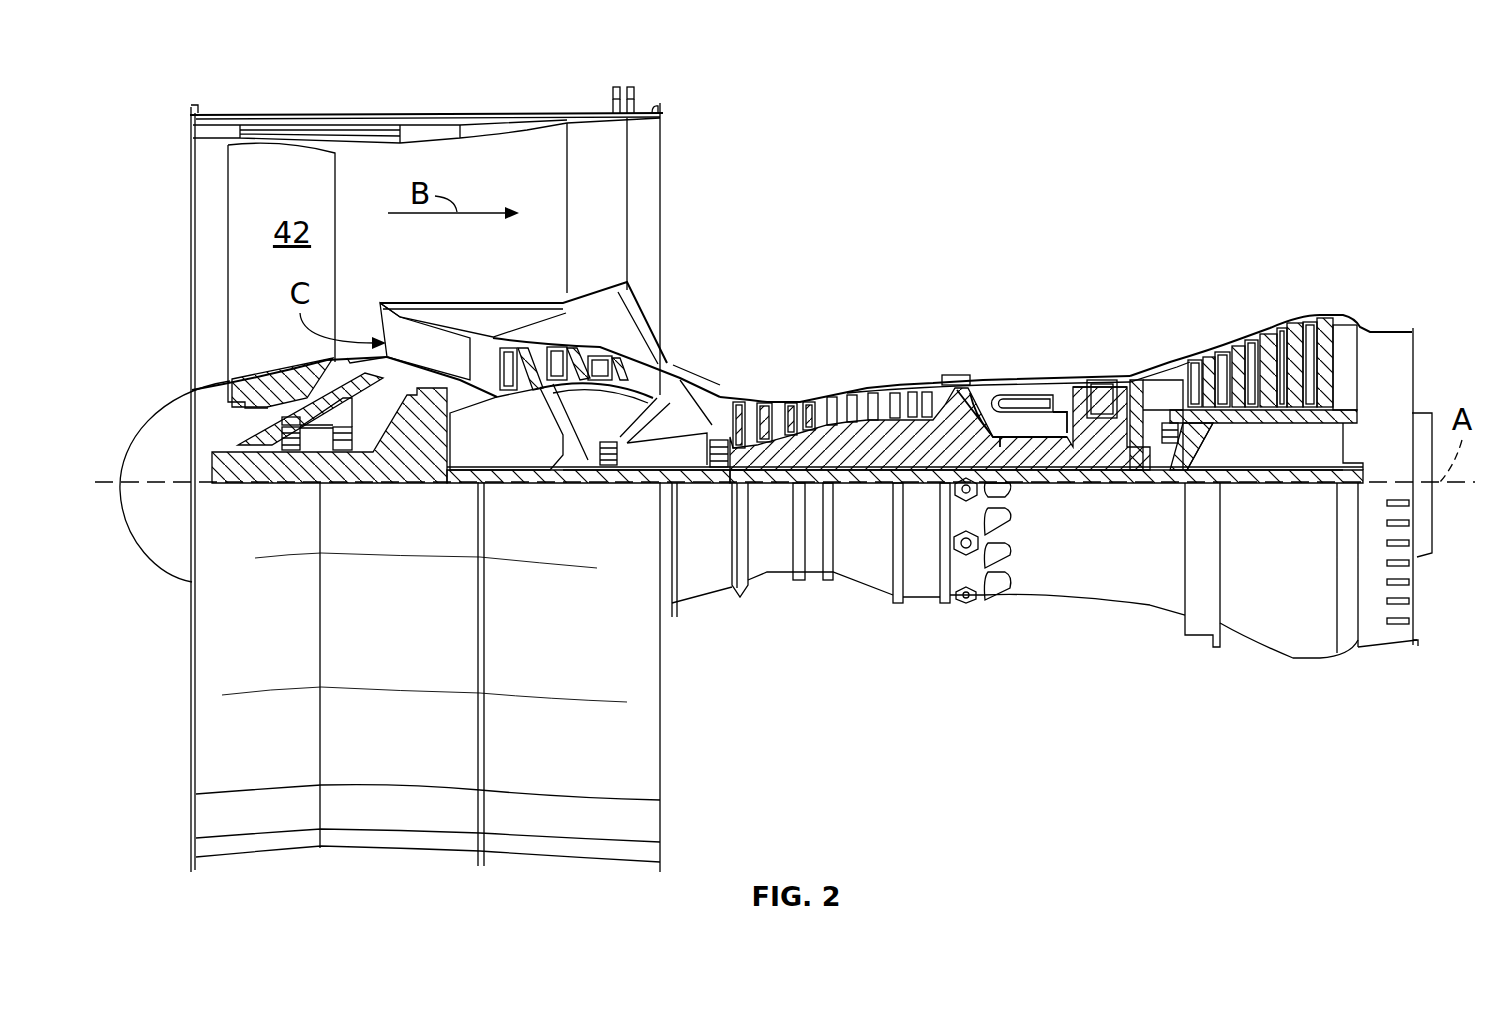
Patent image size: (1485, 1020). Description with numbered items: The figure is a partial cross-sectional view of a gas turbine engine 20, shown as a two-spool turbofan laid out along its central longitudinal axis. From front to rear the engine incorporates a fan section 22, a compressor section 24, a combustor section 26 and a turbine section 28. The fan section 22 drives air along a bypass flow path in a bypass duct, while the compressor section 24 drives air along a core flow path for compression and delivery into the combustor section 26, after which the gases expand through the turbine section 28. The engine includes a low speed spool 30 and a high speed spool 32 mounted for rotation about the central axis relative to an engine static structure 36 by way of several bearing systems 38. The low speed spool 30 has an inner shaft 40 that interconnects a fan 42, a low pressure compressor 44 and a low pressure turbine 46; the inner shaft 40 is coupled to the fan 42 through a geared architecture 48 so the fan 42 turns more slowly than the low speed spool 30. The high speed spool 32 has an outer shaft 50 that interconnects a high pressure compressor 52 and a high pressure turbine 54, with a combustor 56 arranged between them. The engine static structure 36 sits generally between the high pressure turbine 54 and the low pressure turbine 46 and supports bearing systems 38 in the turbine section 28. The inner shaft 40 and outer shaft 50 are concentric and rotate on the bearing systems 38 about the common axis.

The gas turbine engine 20 is at (1240, 148).
The fan section 22 is at (289, 107).
The compressor section 24 is at (856, 250).
The combustor section 26 is at (1017, 252).
The turbine section 28 is at (1172, 248).
The low speed spool 30 is at (882, 492).
The high speed spool 32 is at (945, 420).
The engine static structure 36 is at (920, 605).
The bearing systems 38 is at (293, 448).
The inner shaft 40 is at (677, 478).
The fan 42 is at (253, 362).
The low pressure compressor 44 is at (577, 360).
The low pressure turbine 46 is at (1270, 345).
The geared architecture 48 is at (430, 448).
The outer shaft 50 is at (1048, 458).
The high pressure compressor 52 is at (843, 450).
The high pressure turbine 54 is at (1105, 378).
The combustor 56 is at (1030, 400).